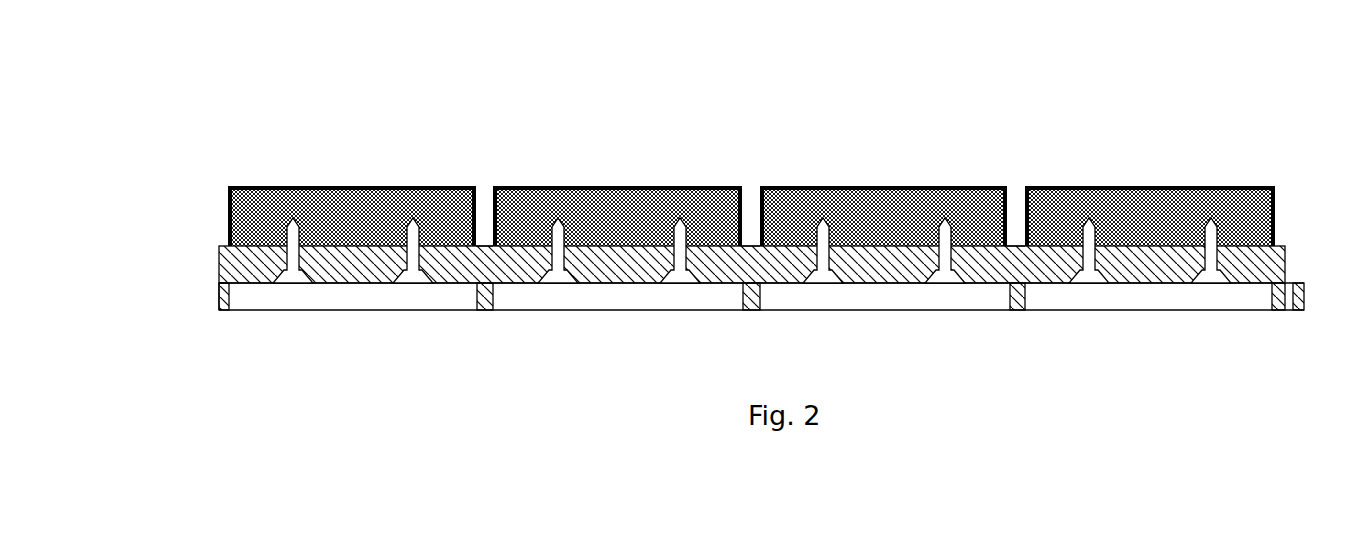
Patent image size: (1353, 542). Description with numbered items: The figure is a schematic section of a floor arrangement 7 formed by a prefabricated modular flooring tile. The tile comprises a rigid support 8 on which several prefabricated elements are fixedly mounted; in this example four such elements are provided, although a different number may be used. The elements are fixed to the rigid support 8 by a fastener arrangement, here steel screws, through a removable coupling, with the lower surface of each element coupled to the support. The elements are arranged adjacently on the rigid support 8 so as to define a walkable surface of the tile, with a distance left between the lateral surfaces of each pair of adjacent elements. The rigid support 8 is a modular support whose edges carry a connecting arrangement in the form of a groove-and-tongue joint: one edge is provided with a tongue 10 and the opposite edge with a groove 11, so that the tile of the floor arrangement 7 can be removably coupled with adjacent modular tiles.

The floor arrangement 7 is at (749, 216).
The rigid support 8 is at (525, 283).
The tongue 10 is at (225, 293).
The groove 11 is at (1287, 303).